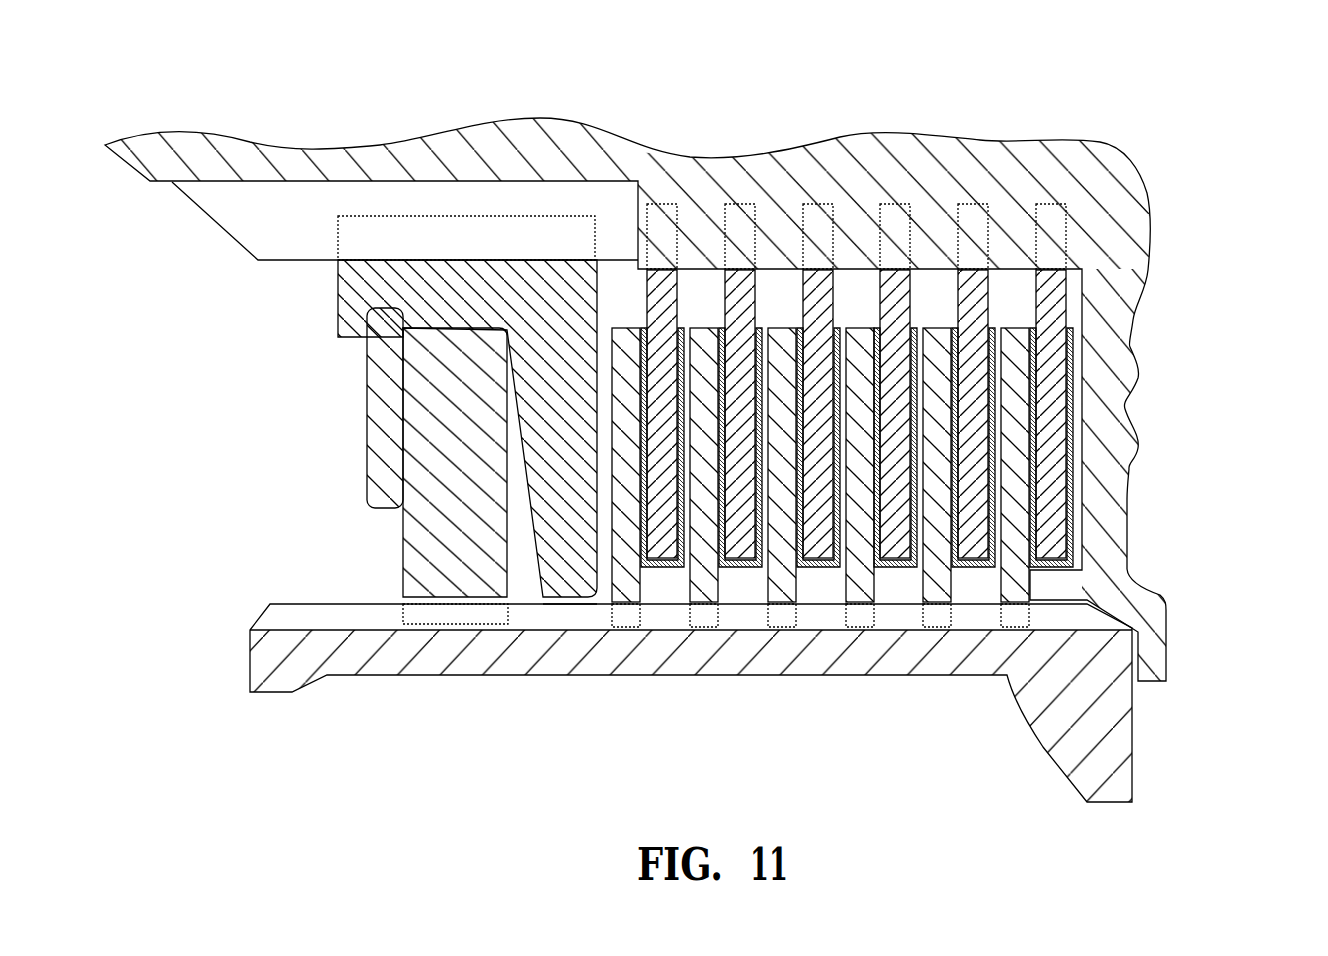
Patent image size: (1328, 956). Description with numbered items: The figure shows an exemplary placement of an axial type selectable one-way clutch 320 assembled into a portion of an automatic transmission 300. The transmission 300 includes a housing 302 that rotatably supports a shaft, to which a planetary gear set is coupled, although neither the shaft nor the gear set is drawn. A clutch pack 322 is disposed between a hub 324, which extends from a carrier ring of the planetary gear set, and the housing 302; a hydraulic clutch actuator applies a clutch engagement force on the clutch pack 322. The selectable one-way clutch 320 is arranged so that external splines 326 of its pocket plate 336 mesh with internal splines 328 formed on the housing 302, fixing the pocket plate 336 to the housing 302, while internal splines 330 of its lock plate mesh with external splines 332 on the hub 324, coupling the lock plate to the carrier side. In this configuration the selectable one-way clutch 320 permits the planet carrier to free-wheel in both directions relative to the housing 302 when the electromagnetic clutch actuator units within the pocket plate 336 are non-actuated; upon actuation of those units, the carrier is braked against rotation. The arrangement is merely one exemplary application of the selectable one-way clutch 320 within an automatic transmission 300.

The automatic transmission 300 is at (1197, 317).
The housing 302 is at (972, 162).
The selectable one-way clutch 320 is at (463, 690).
The clutch pack 322 is at (403, 535).
The hub 324 is at (660, 648).
The external splines 326 is at (511, 213).
The internal splines 328 is at (387, 232).
The internal splines 330 is at (430, 622).
The external splines 332 is at (492, 615).
The pocket plate 336 is at (582, 603).